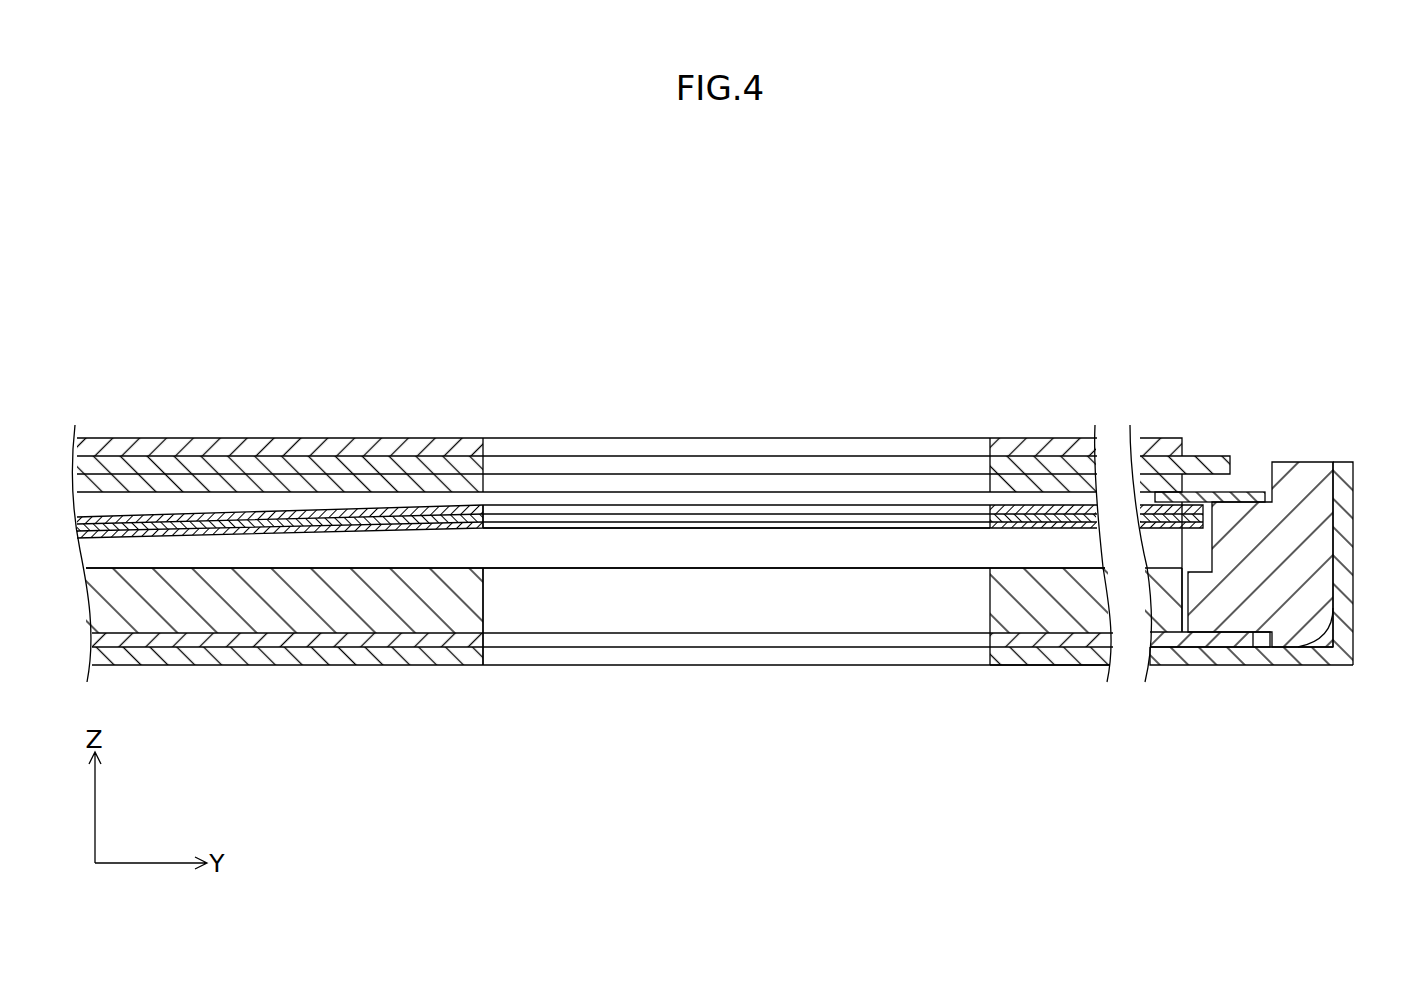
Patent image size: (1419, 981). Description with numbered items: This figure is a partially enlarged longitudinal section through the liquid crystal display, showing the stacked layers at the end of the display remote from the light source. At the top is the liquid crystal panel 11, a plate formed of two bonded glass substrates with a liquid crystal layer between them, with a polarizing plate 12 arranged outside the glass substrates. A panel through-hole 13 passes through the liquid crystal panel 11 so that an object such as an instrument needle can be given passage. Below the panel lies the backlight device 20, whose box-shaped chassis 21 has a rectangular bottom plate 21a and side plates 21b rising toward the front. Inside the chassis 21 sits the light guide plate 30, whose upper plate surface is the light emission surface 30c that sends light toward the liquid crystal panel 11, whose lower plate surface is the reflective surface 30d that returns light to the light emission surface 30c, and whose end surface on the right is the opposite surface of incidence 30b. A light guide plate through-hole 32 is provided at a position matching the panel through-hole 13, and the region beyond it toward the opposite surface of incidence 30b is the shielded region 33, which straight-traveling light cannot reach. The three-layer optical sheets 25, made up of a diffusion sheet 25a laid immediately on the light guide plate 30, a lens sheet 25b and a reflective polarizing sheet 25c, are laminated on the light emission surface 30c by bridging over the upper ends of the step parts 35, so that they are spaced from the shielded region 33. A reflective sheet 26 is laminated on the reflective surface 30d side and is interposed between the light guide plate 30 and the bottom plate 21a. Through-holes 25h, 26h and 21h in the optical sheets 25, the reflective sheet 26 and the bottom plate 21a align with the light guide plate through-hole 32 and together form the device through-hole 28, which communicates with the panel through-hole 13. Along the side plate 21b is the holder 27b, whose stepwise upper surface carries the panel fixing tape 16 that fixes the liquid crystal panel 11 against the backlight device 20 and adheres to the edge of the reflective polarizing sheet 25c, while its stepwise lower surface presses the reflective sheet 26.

The liquid crystal panel 11 is at (1210, 462).
The polarizing plate 12 is at (1171, 487).
The panel through-hole 13 is at (486, 465).
The panel fixing tape 16 is at (1250, 490).
The backlight device 20 is at (1058, 693).
The chassis 21 is at (742, 629).
The bottom plate 21a is at (1293, 660).
The side plate 21b is at (1345, 625).
The through-hole 21h is at (523, 695).
The optical sheets 25 is at (640, 422).
The diffusion sheet 25a is at (417, 527).
The lens sheet 25b is at (335, 523).
The reflective polarizing sheet 25c is at (452, 355).
The through-hole 25h is at (485, 512).
The reflective sheet 26 is at (1165, 640).
The through-hole 26h is at (484, 638).
The holder 27b is at (1308, 545).
The device through-hole 28 is at (616, 645).
The light guide plate 30 is at (658, 577).
The opposite surface of incidence 30b is at (1183, 593).
The light emission surface 30c is at (157, 567).
The reflective surface 30d is at (383, 635).
The light guide plate through-hole 32 is at (484, 600).
The shielded region 33 is at (1020, 568).
The step part 35 is at (898, 545).